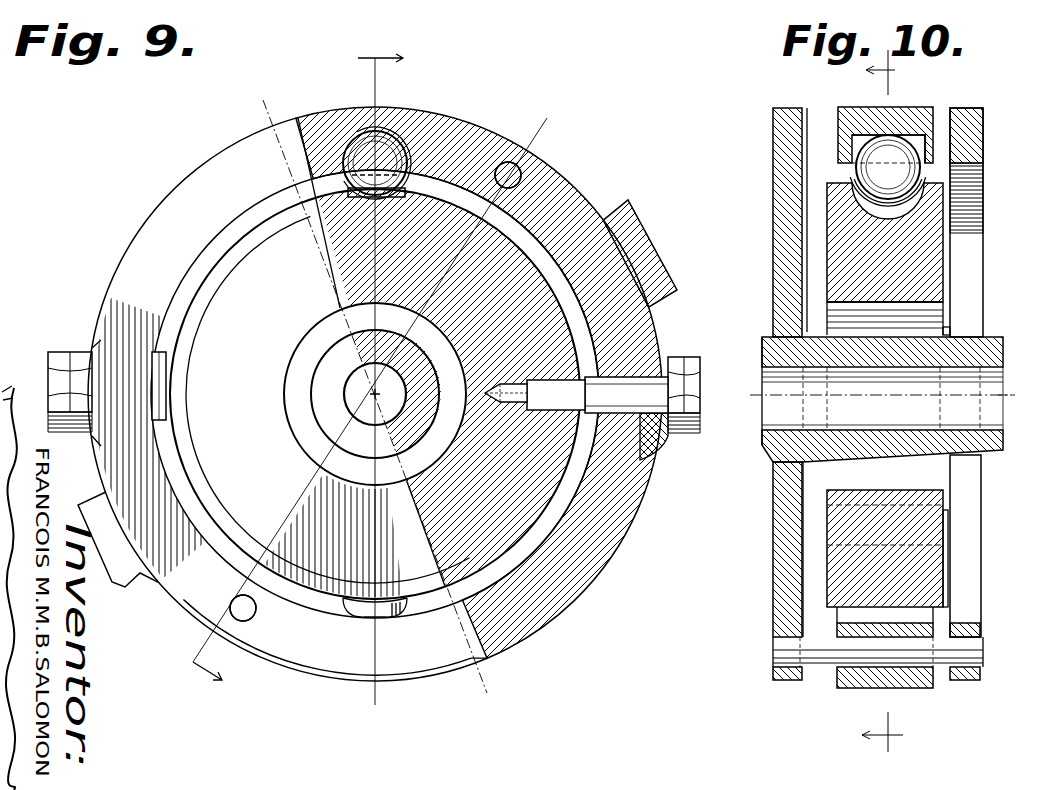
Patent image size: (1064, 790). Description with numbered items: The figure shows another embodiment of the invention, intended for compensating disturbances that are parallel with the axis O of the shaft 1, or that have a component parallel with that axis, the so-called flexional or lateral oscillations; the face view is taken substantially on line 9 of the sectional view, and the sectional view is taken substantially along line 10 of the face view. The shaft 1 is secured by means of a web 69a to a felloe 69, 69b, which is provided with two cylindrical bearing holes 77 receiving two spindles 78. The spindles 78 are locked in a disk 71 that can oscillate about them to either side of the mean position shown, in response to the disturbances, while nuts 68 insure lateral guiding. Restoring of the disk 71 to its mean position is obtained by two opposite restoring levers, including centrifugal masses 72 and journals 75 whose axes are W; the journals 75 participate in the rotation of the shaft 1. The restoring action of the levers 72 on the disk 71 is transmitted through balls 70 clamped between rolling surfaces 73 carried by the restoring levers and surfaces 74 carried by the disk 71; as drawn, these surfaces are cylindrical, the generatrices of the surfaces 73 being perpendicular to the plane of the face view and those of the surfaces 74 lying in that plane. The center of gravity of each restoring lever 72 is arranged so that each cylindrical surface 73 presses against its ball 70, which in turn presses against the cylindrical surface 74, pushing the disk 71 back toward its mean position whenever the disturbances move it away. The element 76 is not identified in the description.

In FIG. 9, the shaft 1 is at (368, 413).
In FIG. 10, the shaft 1 is at (992, 416).
In FIG. 9, the axis of the shaft O is at (375, 394).
In FIG. 10, the axis of the shaft O is at (1003, 396).
In FIG. 10, the section line 9— 9 is at (874, 401).
In FIG. 9, the section line 10— 10 is at (364, 370).
In FIG. 9, the nut 68 is at (683, 395).
In FIG. 9, the felloe 69 is at (97, 450).
In FIG. 10, the felloe 69 is at (946, 333).
In FIG. 9, the web 69a is at (325, 334).
In FIG. 10, the web 69a is at (779, 175).
In FIG. 9, the felloe 69b is at (195, 196).
In FIG. 10, the felloe 69b is at (968, 300).
In FIG. 9, the ball 70 is at (375, 150).
In FIG. 10, the ball 70 is at (870, 168).
In FIG. 9, the disk 71 is at (242, 256).
In FIG. 10, the disk 71 is at (910, 258).
In FIG. 9, the restoring lever 72 is at (612, 234).
In FIG. 10, the restoring lever 72 is at (893, 113).
In FIG. 9, the rolling surface 73 is at (425, 157).
In FIG. 10, the rolling surface 73 is at (916, 138).
In FIG. 9, the surface 74 is at (314, 230).
In FIG. 10, the surface 74 is at (918, 196).
In FIG. 9, the journal 75 is at (540, 180).
In FIG. 10, the journal 75 is at (966, 647).
In FIG. 10, the lower lug 76 is at (783, 681).
In FIG. 9, the cylindrical bearing hole 77 is at (654, 432).
In FIG. 9, the spindle 78 is at (576, 391).
In FIG. 9, the axis of the journals W is at (522, 170).
In FIG. 10, the axis of the journals W is at (989, 653).